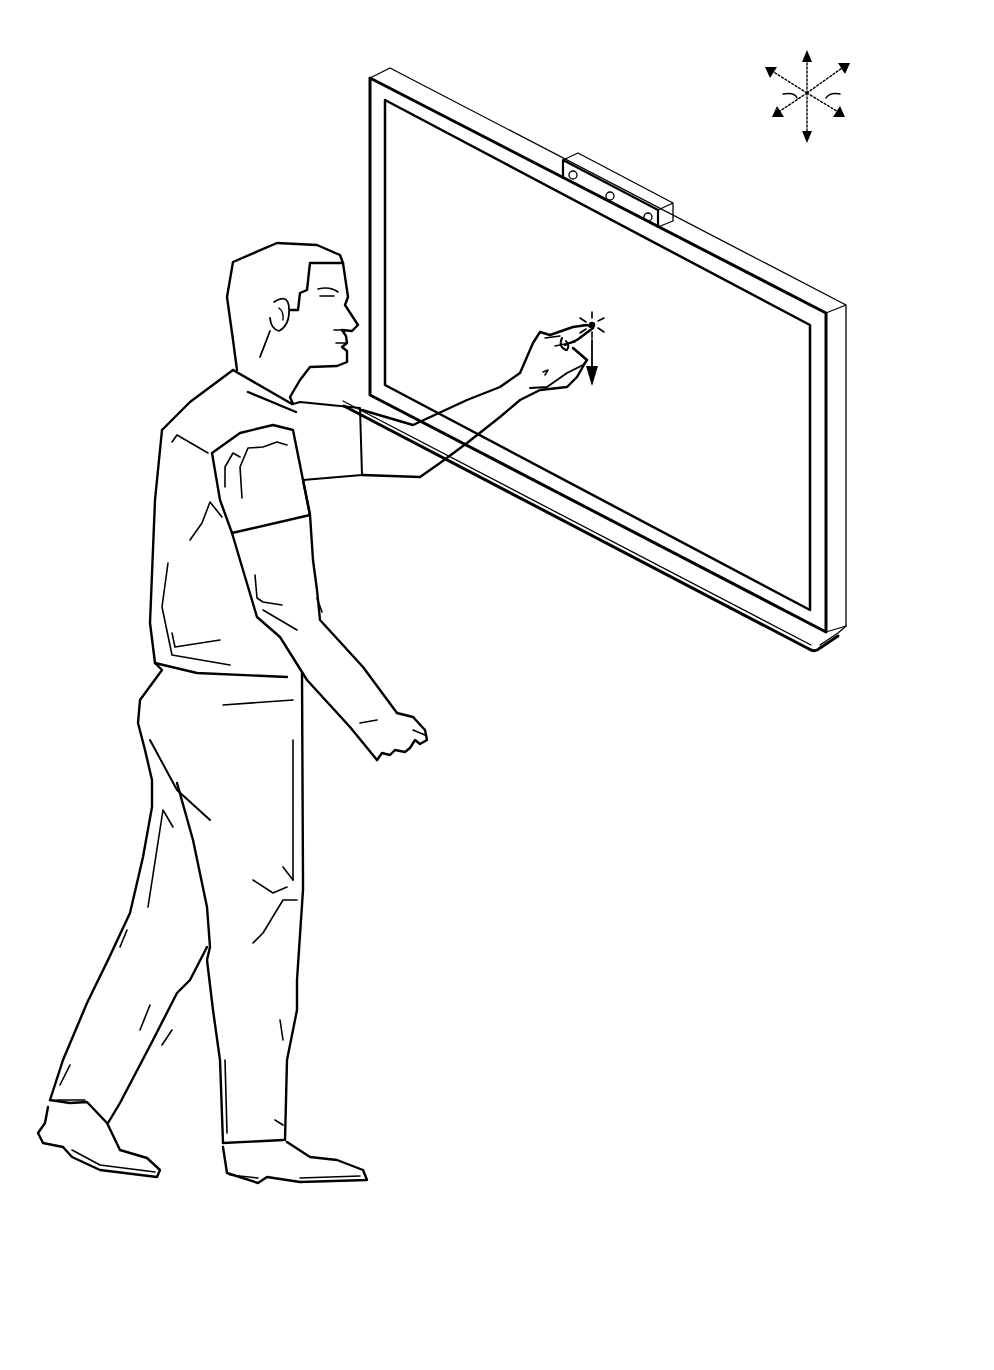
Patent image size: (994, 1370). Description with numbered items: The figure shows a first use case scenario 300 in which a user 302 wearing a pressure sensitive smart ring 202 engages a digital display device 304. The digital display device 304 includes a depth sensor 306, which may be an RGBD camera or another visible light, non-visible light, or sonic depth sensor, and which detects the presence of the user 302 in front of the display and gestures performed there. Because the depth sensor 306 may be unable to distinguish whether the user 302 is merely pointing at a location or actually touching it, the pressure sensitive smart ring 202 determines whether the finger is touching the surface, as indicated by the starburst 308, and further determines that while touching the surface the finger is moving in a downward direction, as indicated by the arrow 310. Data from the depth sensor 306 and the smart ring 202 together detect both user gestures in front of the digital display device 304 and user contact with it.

The use case scenario 300 is at (225, 52).
The user 302 is at (186, 396).
The digital display device 304 is at (405, 80).
The depth sensor 306 is at (646, 190).
The pressure sensitive smart ring 202 is at (560, 335).
The starburst 308 is at (598, 325).
The arrow 310 is at (598, 361).